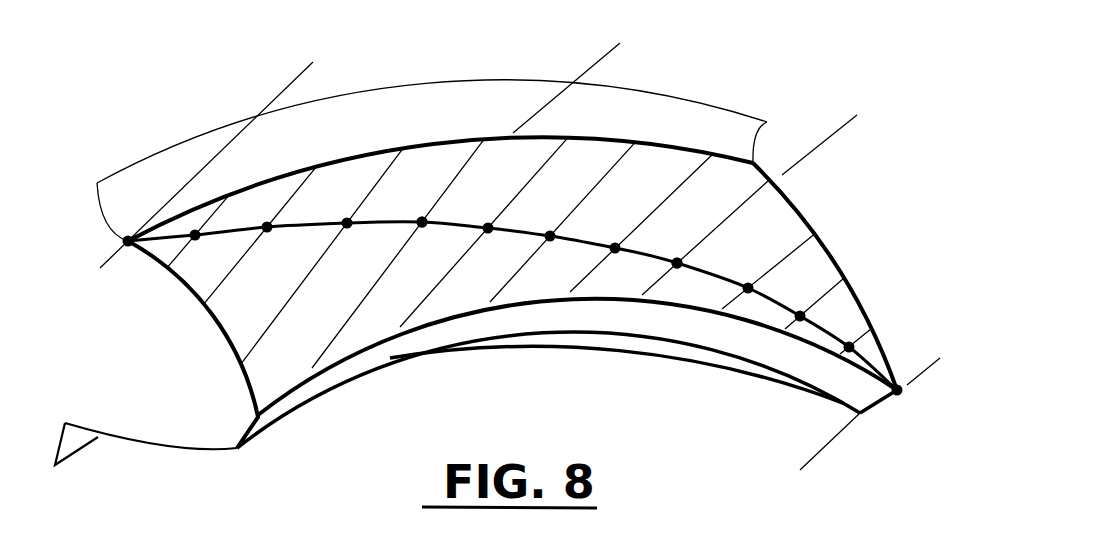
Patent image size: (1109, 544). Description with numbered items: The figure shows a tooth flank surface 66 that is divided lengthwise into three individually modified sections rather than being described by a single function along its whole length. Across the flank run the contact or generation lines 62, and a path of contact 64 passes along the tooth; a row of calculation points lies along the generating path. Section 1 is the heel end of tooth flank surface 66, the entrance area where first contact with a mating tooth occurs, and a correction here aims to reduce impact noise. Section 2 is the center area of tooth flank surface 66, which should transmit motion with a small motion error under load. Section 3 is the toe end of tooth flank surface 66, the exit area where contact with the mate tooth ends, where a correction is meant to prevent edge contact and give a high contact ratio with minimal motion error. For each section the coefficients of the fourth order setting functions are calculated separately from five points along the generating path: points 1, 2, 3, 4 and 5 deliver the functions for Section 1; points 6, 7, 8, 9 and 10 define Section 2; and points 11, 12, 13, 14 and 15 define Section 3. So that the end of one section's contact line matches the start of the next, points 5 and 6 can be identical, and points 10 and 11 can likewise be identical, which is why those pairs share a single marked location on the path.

The section 1 (heel end) / calculation point 1 is at (807, 158).
The section 2 (center area) / calculation point 2 is at (614, 52).
The section 3 (toe end) / calculation point 3 is at (317, 70).
The calculation point 4 is at (747, 274).
The calculation point 5 is at (675, 249).
The calculation point 6 is at (680, 277).
The calculation point 7 is at (617, 263).
The calculation point 8 is at (553, 249).
The calculation point 9 is at (491, 244).
The calculation point 10 is at (425, 240).
The calculation point 11 is at (414, 211).
The calculation point 12 is at (355, 240).
The calculation point 13 is at (267, 246).
The calculation point 14 is at (195, 251).
The calculation point 15 is at (129, 254).
The contact or generation lines 62 is at (514, 283).
The path of contact 64 is at (718, 277).
The tooth flank surface 66 is at (235, 318).